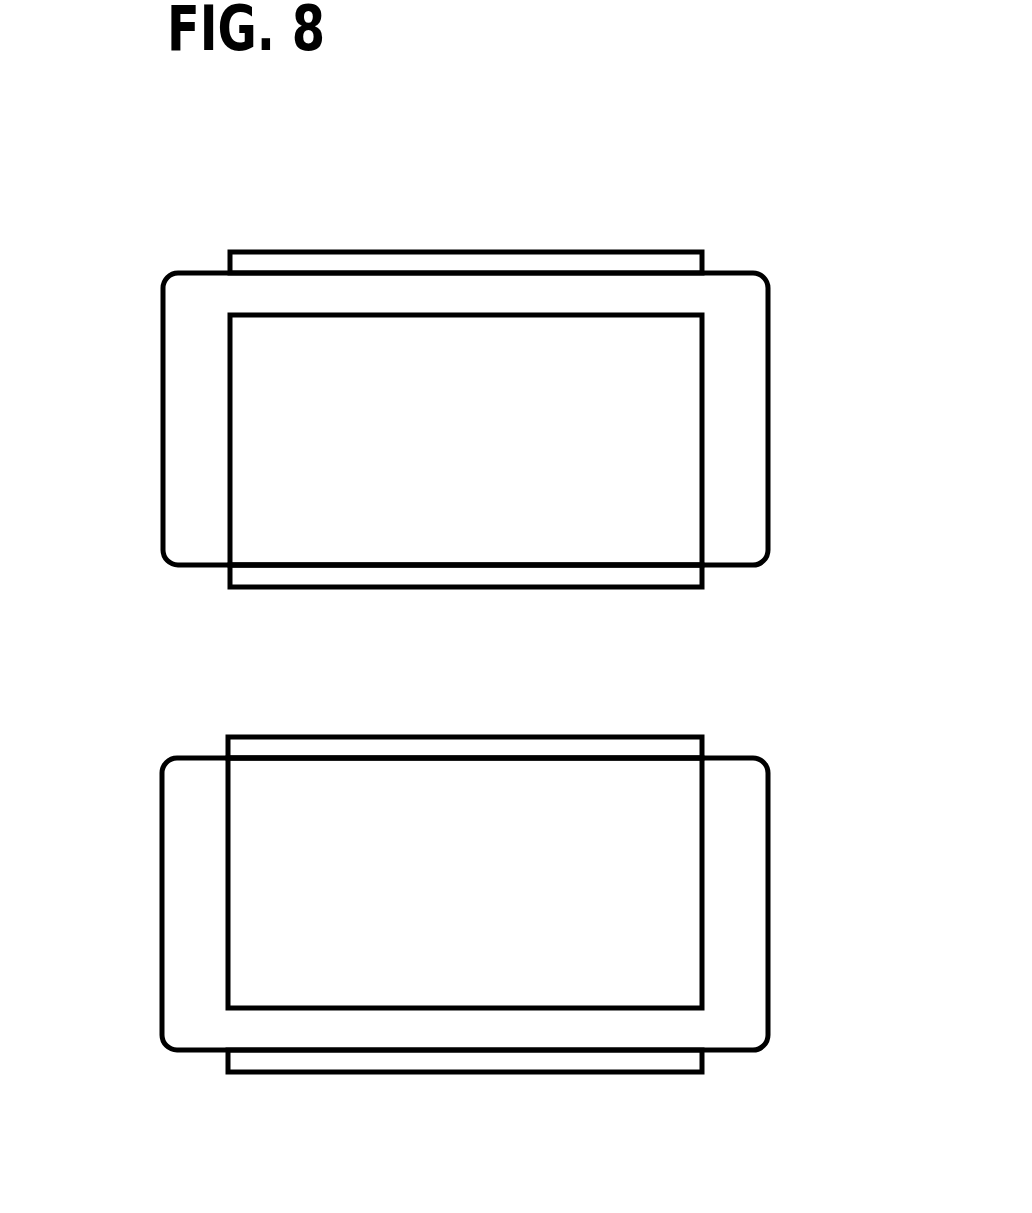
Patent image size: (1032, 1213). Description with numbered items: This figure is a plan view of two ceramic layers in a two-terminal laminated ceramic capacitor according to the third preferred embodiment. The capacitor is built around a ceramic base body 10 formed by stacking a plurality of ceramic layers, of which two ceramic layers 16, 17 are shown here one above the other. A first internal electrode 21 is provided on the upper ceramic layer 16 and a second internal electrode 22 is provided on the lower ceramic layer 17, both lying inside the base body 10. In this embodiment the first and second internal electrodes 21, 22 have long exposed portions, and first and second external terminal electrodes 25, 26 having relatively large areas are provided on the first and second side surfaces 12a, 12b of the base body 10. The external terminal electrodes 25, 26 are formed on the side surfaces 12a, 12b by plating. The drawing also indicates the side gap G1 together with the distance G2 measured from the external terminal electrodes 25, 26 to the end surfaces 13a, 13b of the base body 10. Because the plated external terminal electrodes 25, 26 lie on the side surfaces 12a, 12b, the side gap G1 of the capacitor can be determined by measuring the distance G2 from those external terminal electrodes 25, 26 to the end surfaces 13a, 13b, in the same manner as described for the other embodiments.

The ceramic base body 10 is at (474, 670).
The first side surface 12a is at (332, 272).
The second side surface 12b is at (320, 568).
The first end surface 13a is at (162, 332).
The second end surface 13b is at (772, 335).
The ceramic layer 16 is at (474, 427).
The ceramic layer 17 is at (745, 948).
The first internal electrode 21 is at (668, 502).
The second internal electrode 22 is at (663, 832).
The first external terminal electrode 25 is at (507, 250).
The second external terminal electrode 26 is at (662, 580).
The side gap G1 is at (93, 444).
The distance from external terminal electrodes to end surfaces G2 is at (300, 217).